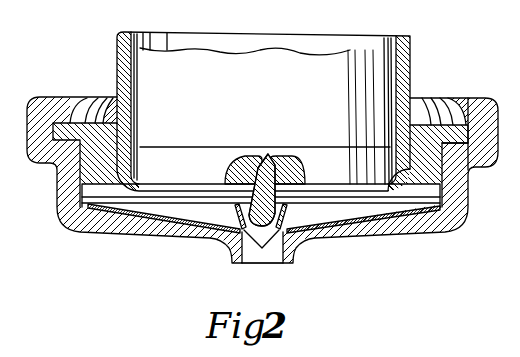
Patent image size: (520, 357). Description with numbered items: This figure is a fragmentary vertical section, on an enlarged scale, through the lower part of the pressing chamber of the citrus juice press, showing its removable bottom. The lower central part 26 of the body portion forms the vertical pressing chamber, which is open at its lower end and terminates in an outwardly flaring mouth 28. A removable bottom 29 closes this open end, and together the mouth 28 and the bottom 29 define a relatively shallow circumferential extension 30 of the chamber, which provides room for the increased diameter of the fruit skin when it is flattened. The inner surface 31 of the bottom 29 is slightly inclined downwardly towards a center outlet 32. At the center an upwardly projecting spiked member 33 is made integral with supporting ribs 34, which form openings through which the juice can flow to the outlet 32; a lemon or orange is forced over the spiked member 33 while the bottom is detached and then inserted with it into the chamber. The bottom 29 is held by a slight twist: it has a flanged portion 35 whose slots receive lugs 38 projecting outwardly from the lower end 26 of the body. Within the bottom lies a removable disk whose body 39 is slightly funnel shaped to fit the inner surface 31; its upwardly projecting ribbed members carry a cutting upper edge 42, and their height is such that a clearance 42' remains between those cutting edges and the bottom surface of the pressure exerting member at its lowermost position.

The lower central part of the body portion 26 is at (412, 64).
The outwardly flaring mouth 28 is at (404, 167).
The removable bottom 29 is at (452, 224).
The circumferential extension of the pressing chamber 30 is at (437, 199).
The inner surface of the bottom part 31 is at (161, 236).
The center outlet 32 is at (268, 262).
The spiked member 33 is at (268, 156).
The supporting ribs 34 is at (246, 235).
The flanged portion 35 is at (462, 107).
The lugs 38 is at (462, 147).
The body of the disk 39 is at (332, 232).
The cutting upper edge 42 is at (261, 163).
The clearance 42' is at (236, 236).